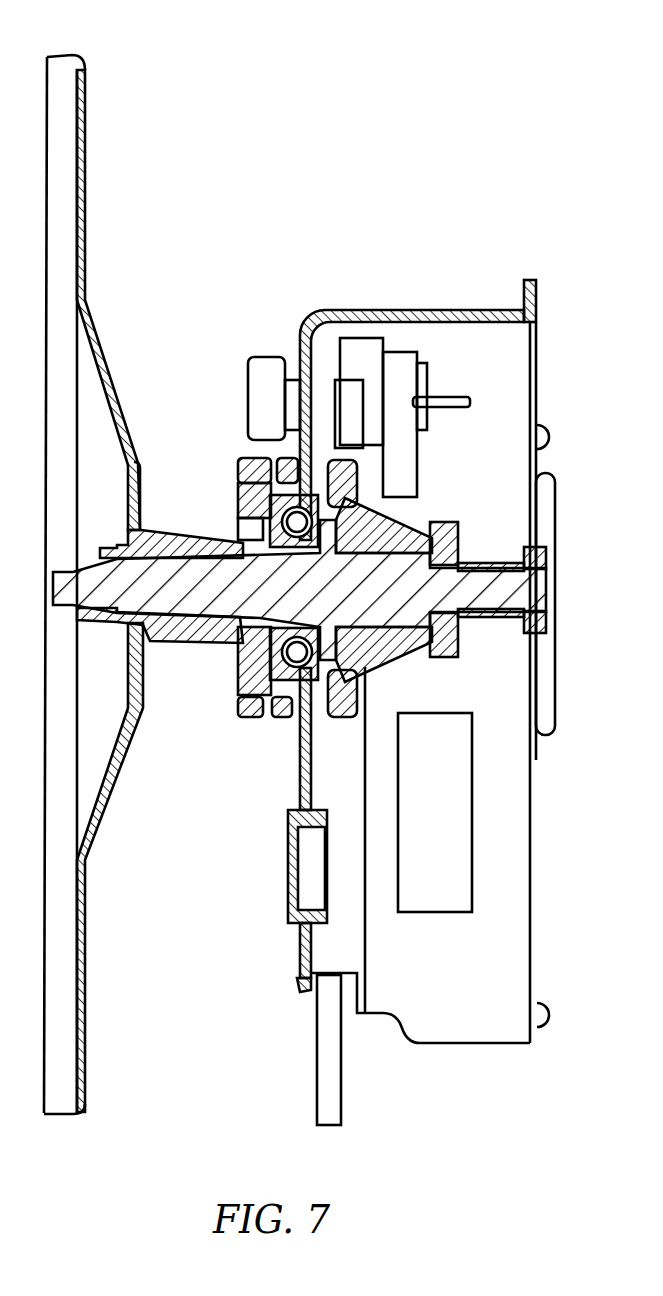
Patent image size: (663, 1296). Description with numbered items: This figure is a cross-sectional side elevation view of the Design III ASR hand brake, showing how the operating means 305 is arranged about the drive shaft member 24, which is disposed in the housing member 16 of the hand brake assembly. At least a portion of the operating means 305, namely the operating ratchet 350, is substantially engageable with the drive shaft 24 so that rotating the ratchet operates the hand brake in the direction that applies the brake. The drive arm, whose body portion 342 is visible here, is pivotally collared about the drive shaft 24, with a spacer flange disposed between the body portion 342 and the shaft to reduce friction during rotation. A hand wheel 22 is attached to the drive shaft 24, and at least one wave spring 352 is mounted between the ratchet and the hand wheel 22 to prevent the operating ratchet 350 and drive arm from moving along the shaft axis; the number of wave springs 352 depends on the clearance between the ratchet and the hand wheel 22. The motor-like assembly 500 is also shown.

The operating means 305 is at (202, 138).
The motor assembly 500 is at (486, 204).
The housing member 16 is at (396, 312).
The operating ratchet 350 is at (250, 468).
The drive shaft member 24 is at (86, 584).
The wave spring 352 is at (242, 645).
The body portion 342 is at (285, 719).
The hand wheel 22 is at (84, 1037).